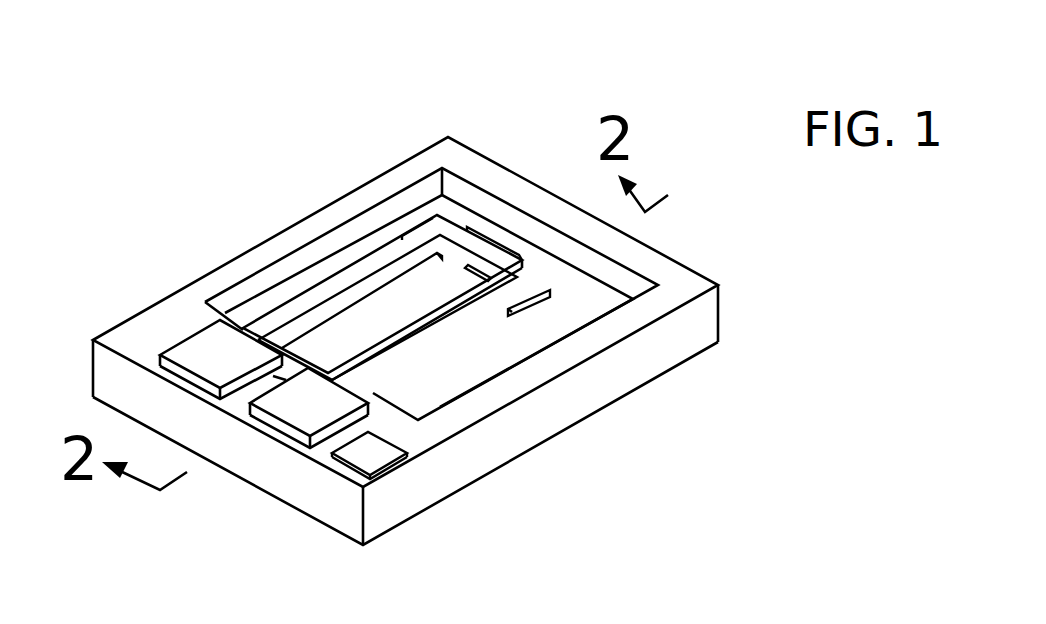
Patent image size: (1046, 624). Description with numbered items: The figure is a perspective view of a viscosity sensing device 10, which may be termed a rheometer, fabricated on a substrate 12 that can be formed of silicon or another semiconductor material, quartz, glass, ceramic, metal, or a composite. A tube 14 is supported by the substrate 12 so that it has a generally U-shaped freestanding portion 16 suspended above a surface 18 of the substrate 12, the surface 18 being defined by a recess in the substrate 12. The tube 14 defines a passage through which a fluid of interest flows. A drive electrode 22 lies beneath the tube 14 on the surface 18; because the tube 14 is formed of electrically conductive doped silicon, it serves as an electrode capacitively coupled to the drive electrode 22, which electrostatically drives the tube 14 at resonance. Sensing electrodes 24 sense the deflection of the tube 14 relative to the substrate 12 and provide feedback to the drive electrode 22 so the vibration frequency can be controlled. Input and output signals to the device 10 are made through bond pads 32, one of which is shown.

The viscosity sensing device 10 is at (188, 118).
The substrate 12 is at (563, 418).
The tube 14 is at (466, 351).
The freestanding portion 16 is at (373, 258).
The surface 18 is at (310, 283).
The drive electrode 22 is at (503, 248).
The sensing electrodes 24 is at (413, 227).
The bond pads 32 is at (388, 462).